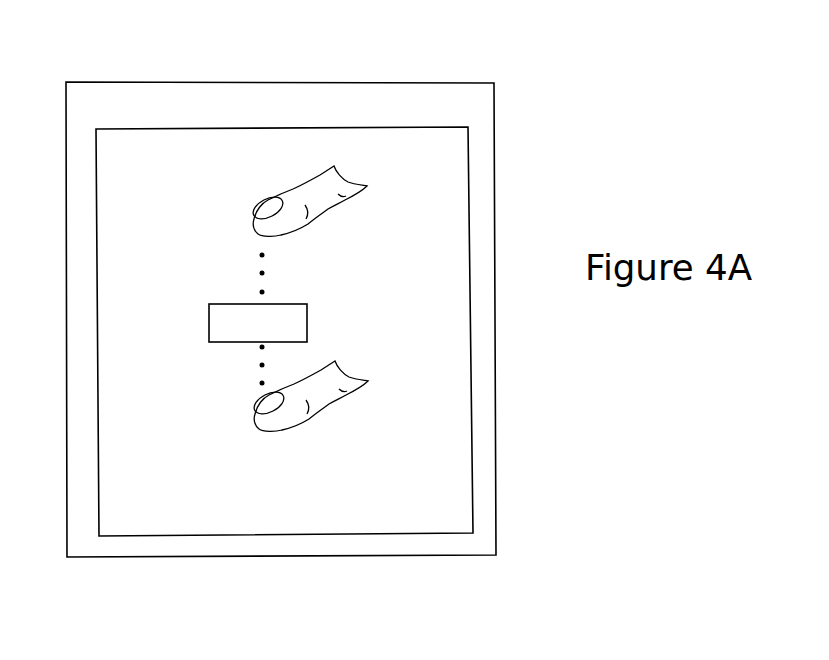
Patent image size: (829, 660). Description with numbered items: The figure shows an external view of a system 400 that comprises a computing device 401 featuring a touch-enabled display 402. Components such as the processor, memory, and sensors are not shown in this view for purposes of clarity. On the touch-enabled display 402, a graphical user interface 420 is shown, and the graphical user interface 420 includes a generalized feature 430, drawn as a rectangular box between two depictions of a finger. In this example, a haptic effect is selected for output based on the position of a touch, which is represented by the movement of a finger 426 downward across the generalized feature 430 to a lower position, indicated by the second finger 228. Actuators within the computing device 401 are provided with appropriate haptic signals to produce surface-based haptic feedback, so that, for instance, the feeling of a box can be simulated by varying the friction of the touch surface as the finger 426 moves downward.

The system 400 is at (197, 68).
The computing device 401 is at (388, 108).
The touch-enabled display 402 is at (413, 153).
The graphical user interface 420 is at (191, 202).
The finger 426 is at (328, 209).
The generalized feature 430 is at (307, 320).
The finger at final touch position 228 is at (329, 404).